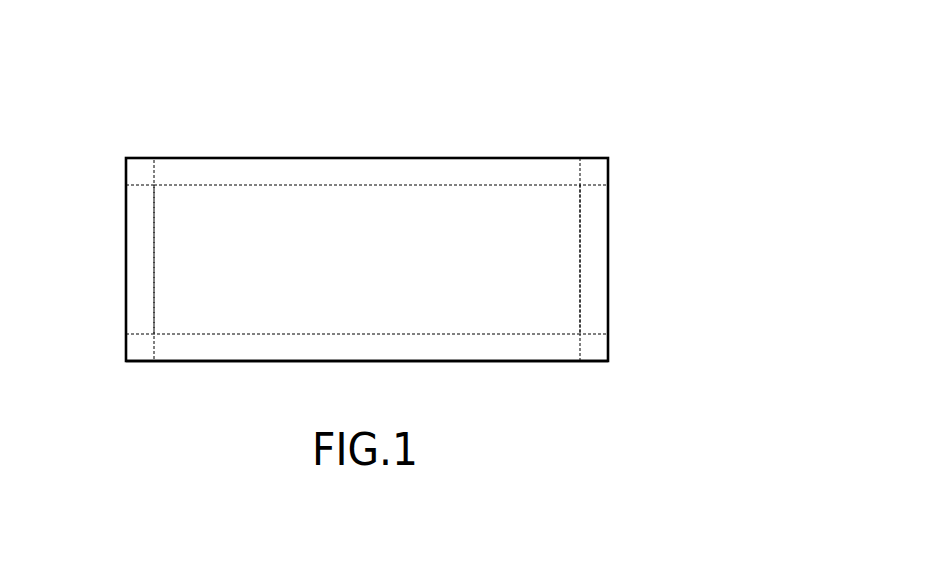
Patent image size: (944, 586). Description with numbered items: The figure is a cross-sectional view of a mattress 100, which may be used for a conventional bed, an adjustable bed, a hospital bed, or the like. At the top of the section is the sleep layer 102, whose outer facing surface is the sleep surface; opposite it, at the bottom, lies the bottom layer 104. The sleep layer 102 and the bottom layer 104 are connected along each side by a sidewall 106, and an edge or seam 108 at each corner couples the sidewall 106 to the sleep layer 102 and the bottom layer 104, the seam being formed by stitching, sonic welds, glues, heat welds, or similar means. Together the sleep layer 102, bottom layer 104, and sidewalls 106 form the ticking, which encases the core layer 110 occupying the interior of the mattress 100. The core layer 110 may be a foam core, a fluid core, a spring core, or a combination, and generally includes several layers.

The mattress 100 is at (648, 66).
The sleep layer 102 is at (490, 168).
The bottom layer 104 is at (208, 350).
The sidewall 106 is at (140, 294).
The edge or seam 108 is at (140, 172).
The core layer 110 is at (318, 235).